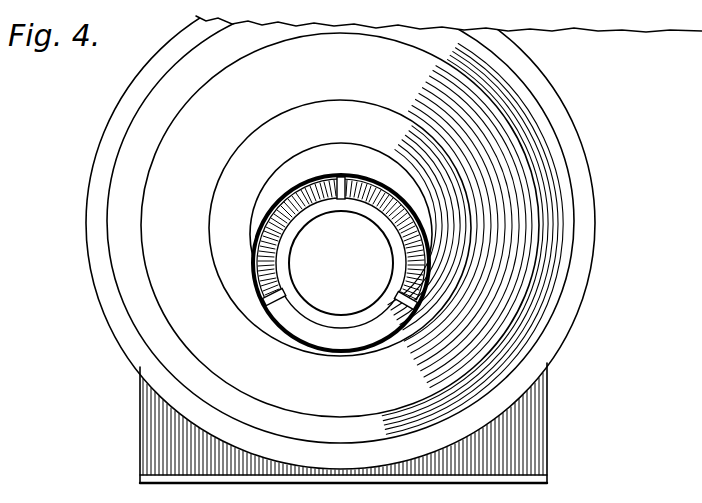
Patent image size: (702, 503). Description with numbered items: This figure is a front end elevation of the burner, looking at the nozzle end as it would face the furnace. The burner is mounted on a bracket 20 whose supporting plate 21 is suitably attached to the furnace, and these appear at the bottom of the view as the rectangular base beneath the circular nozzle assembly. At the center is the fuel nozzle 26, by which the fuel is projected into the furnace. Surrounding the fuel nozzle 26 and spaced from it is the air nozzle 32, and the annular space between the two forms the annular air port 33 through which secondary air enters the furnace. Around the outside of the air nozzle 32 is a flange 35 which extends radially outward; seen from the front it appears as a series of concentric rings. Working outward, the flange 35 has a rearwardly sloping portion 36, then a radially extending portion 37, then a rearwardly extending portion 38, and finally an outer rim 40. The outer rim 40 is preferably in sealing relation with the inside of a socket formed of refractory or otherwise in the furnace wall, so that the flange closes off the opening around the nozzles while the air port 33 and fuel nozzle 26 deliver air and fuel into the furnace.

The bracket 20 is at (538, 417).
The supporting plate 21 is at (538, 478).
The fuel nozzle 26 is at (317, 312).
The air nozzle 32 is at (363, 166).
The annular air port 33 is at (404, 313).
The flange 35 is at (340, 228).
The rearwardly sloping portion 36 is at (341, 197).
The radially extending portion 37 is at (340, 225).
The rearwardly extending portion 38 is at (340, 221).
The outer rim 40 is at (571, 142).